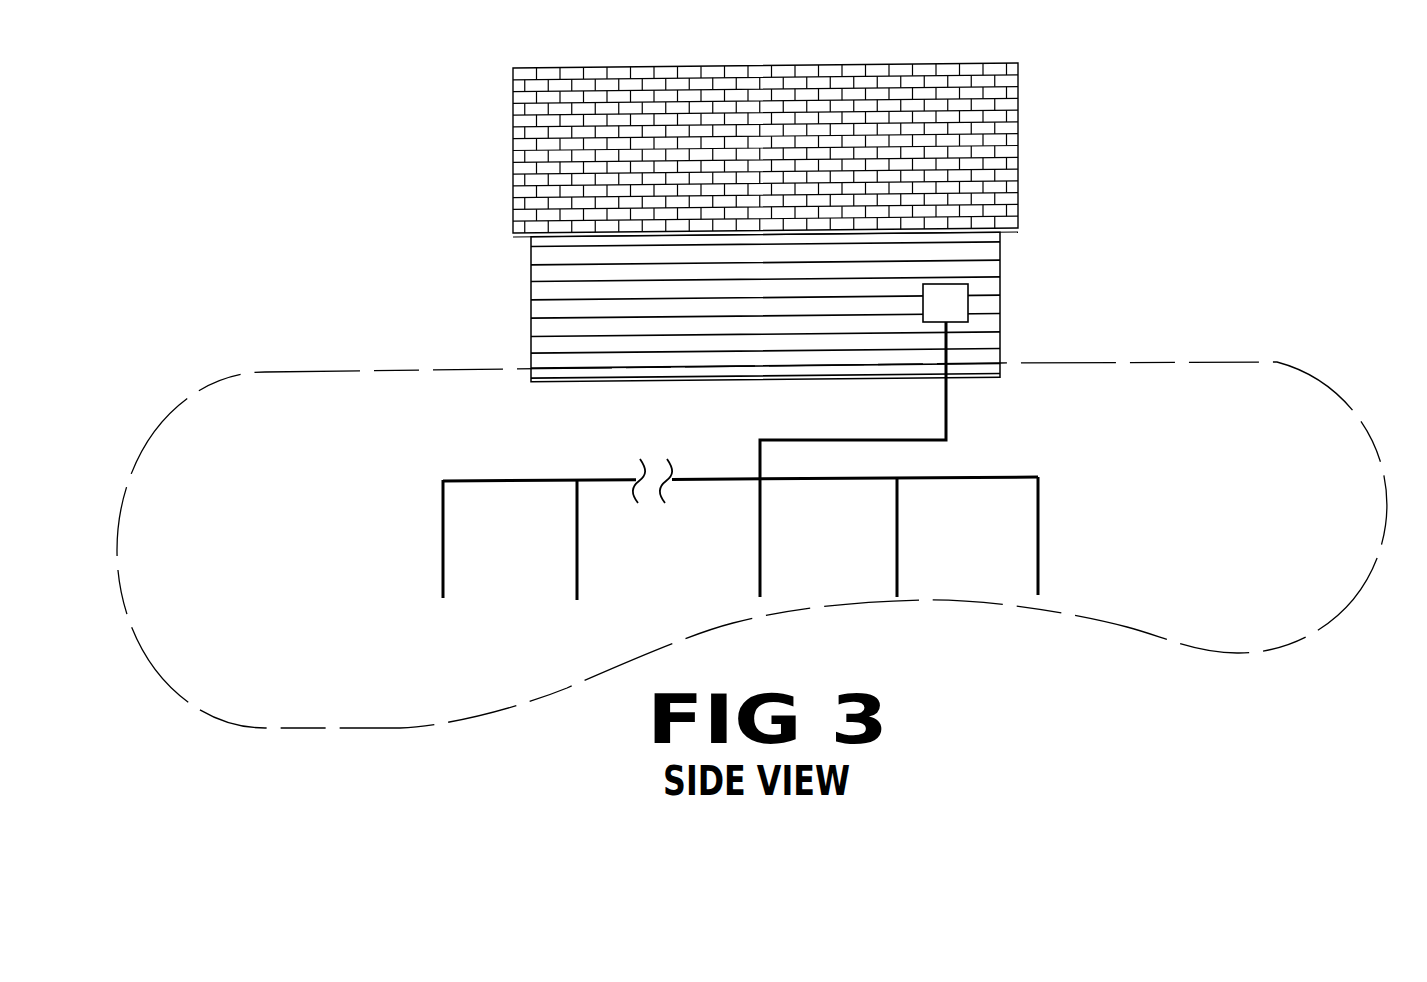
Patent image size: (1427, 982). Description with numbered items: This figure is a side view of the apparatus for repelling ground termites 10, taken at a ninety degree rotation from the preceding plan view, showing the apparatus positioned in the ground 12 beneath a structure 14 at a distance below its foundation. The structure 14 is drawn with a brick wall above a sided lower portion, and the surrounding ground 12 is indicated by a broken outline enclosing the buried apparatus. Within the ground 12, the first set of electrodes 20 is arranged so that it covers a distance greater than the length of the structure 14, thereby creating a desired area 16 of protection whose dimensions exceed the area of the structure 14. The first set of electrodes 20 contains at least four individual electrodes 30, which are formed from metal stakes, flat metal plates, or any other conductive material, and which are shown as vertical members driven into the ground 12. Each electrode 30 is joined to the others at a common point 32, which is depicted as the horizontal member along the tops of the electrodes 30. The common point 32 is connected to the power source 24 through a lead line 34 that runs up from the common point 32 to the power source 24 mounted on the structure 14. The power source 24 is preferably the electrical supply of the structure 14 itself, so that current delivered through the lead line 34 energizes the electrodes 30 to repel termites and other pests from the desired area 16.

The apparatus for repelling ground termites 10 is at (845, 374).
The ground 12 is at (1248, 460).
The structure 14 is at (1000, 128).
The desired area 16 is at (625, 457).
The first set of electrodes 20 is at (685, 506).
The power source 24 is at (953, 300).
The electrode 30 is at (443, 550).
The common point 32 is at (758, 478).
The lead line 34 is at (908, 440).